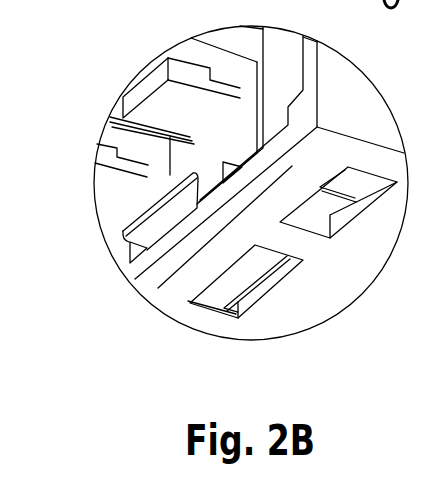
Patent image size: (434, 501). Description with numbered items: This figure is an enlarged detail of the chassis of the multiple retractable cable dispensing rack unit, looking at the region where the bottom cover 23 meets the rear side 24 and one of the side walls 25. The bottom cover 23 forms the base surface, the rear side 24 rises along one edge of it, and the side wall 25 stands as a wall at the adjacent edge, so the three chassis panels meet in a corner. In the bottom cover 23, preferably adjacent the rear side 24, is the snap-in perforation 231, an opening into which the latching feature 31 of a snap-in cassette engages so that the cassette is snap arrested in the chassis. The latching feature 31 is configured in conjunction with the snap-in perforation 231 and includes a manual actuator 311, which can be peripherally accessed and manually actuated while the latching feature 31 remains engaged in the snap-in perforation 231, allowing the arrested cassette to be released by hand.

The bottom cover 23 is at (288, 315).
The side wall 25 is at (337, 100).
The manual actuator 311 is at (155, 80).
The rear side 24 is at (122, 260).
The latching feature 31 is at (224, 279).
The snap-in perforation 231 is at (221, 312).